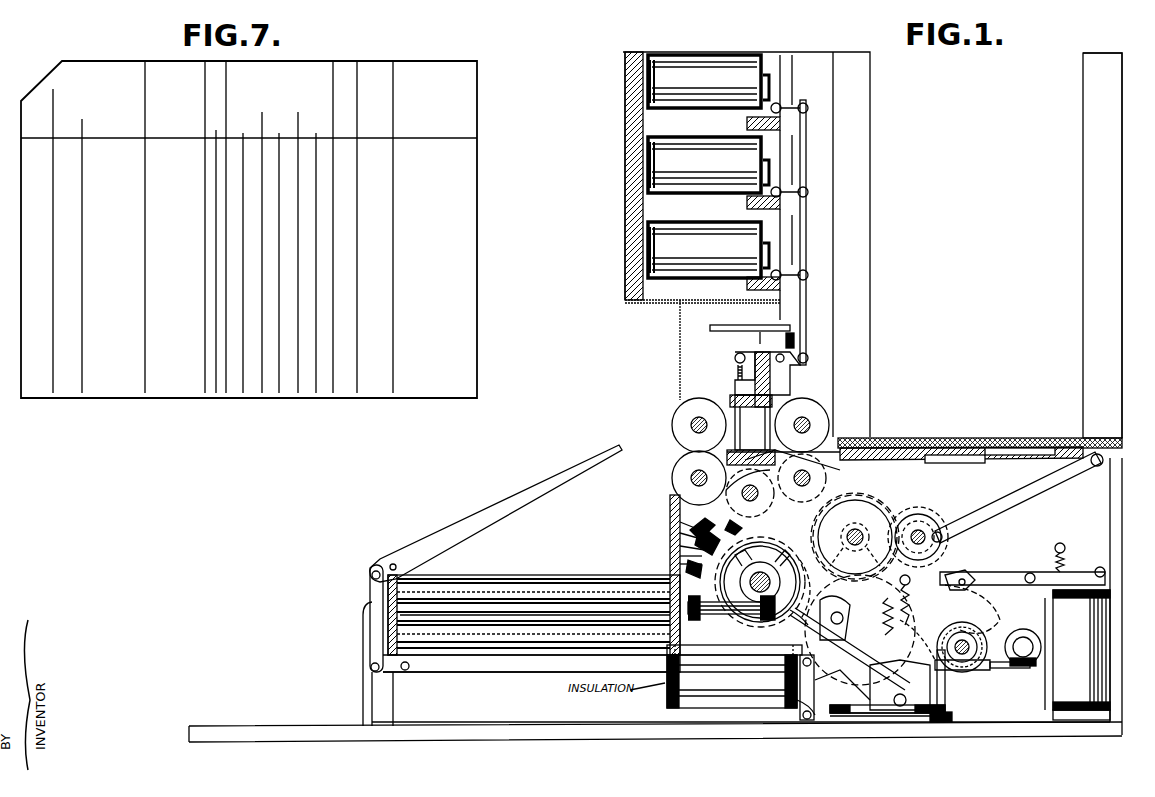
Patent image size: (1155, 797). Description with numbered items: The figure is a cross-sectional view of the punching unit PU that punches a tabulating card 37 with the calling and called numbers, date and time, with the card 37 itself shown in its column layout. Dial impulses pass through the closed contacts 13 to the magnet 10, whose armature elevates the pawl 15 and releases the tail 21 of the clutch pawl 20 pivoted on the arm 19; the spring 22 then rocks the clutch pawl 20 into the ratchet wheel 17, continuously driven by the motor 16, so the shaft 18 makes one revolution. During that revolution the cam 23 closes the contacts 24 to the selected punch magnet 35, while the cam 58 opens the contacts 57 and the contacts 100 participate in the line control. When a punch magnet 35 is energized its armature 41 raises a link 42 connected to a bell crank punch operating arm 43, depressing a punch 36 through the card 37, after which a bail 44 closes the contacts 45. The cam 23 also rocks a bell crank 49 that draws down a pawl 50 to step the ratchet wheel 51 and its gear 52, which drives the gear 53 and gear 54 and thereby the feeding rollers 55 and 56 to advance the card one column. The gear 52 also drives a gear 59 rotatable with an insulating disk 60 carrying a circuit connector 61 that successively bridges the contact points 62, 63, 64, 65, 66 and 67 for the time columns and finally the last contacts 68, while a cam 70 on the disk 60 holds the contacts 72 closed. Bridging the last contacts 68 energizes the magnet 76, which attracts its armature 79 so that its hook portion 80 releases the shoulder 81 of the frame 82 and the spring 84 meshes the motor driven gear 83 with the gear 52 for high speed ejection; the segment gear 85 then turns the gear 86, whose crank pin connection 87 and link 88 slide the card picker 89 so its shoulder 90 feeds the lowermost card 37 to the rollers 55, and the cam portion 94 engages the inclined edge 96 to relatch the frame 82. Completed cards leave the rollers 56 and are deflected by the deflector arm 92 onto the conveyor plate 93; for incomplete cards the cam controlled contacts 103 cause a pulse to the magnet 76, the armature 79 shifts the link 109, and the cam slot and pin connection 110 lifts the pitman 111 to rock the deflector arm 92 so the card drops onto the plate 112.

In FIG. 7, the tabulating card 37 is at (458, 352).
In FIG. 1, the tabulating card 37 is at (782, 440).
In FIG. 1, the punching unit PU is at (612, 199).
In FIG. 1, the punch magnet 35 is at (700, 172).
In FIG. 1, the armature 41 is at (772, 250).
In FIG. 1, the link 42 is at (806, 350).
In FIG. 1, the bell crank punch operating arm 43 is at (790, 362).
In FIG. 1, the bail 44 is at (785, 340).
In FIG. 1, the contacts 45 is at (770, 327).
In FIG. 1, the punch 36 is at (740, 428).
In FIG. 1, the feeding rollers 55 is at (818, 414).
In FIG. 1, the feeding rollers 56 is at (680, 466).
In FIG. 1, the gear 54 is at (802, 481).
In FIG. 1, the gear 53 is at (826, 478).
In FIG. 1, the segment gear 85 is at (850, 548).
In FIG. 1, the gear 52 is at (870, 500).
In FIG. 1, the ratchet wheel 51 is at (905, 508).
In FIG. 1, the gear 86 is at (925, 520).
In FIG. 1, the crank pin connection 87 is at (945, 538).
In FIG. 1, the link 88 is at (1058, 482).
In FIG. 1, the card picker 89 is at (1095, 468).
In FIG. 1, the shoulder 90 is at (1115, 435).
In FIG. 1, the cam 70 is at (748, 560).
In FIG. 1, the insulating disk 60 is at (722, 578).
In FIG. 1, the circuit connector 61 is at (795, 612).
In FIG. 1, the contact points 62 is at (722, 518).
In FIG. 1, the contact points 63 is at (697, 520).
In FIG. 1, the contact points 64 is at (680, 522).
In FIG. 1, the contact points 65 is at (680, 533).
In FIG. 1, the contact points 66 is at (680, 546).
In FIG. 1, the contact points 67 is at (680, 556).
In FIG. 1, the brush 68 is at (680, 564).
In FIG. 1, the gear 59 is at (735, 625).
In FIG. 1, the contacts 72 is at (750, 628).
In FIG. 1, the pawl 50 is at (805, 628).
In FIG. 1, the pawl 15 is at (955, 575).
In FIG. 1, the tail 21 is at (975, 575).
In FIG. 1, the spring 22 is at (945, 590).
In FIG. 1, the inclined edge 96 is at (904, 574).
In FIG. 1, the arm 19 is at (940, 610).
In FIG. 1, the clutch pawl 20 is at (985, 615).
In FIG. 1, the shaft 18 is at (985, 630).
In FIG. 1, the ratchet wheel 17 is at (1025, 637).
In FIG. 1, the motor 16 is at (1040, 647).
In FIG. 1, the magnet 10 is at (1060, 680).
In FIG. 1, the contacts 100 is at (1000, 665).
In FIG. 1, the contacts 57 is at (955, 680).
In FIG. 1, the cam 58 is at (953, 722).
In FIG. 1, the contacts 24 is at (880, 675).
In FIG. 1, the bell crank 49 is at (885, 630).
In FIG. 1, the spring 84 is at (881, 617).
In FIG. 1, the cam 23 is at (925, 660).
In FIG. 1, the cam portion 94 is at (842, 600).
In FIG. 1, the magnet 76 is at (715, 690).
In FIG. 1, the hook portion 80 is at (785, 680).
In FIG. 1, the armature 79 is at (790, 708).
In FIG. 1, the shoulder 81 is at (805, 715).
In FIG. 1, the contacts 13 is at (840, 705).
In FIG. 1, the plate or frame 82 is at (855, 715).
In FIG. 1, the gear 83 is at (880, 730).
In FIG. 1, the deflector arm 92 is at (543, 485).
In FIG. 1, the conveyor plate 93 is at (533, 575).
In FIG. 1, the cam controlled contacts 103 is at (598, 627).
In FIG. 1, the pitman 111 is at (366, 612).
In FIG. 1, the cam slot and pin connection 110 is at (405, 670).
In FIG. 1, the link 109 is at (463, 672).
In FIG. 1, the plate 112 is at (240, 726).